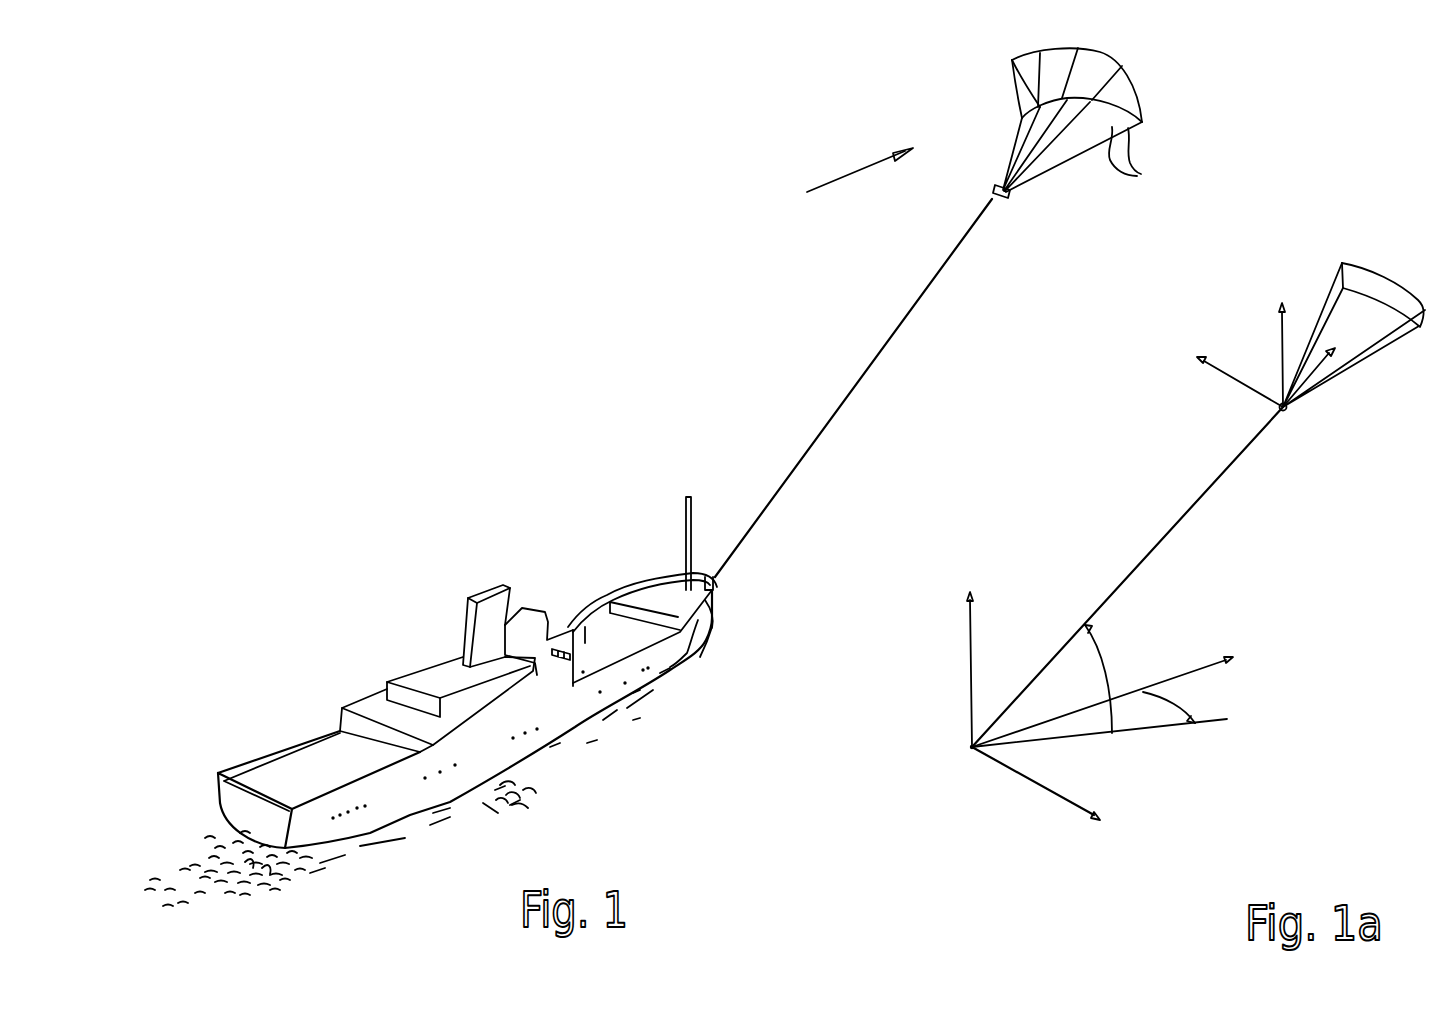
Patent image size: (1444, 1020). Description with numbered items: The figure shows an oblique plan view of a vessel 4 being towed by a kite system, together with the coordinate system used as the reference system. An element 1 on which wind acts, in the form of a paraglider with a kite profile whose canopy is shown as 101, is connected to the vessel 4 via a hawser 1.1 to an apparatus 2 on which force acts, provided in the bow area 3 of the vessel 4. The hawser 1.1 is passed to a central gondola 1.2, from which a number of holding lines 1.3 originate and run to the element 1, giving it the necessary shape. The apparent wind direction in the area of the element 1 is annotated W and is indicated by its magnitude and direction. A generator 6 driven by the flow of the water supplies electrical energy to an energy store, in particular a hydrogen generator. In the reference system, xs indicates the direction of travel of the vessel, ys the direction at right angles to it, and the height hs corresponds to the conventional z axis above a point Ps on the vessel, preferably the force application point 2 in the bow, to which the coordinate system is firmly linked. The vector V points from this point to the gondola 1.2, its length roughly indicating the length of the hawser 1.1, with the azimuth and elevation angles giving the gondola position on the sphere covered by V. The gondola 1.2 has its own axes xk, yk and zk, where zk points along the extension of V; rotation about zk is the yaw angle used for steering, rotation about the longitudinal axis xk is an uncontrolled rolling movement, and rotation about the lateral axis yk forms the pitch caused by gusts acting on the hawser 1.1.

In FIG. 1, the element on which wind acts 1 is at (976, 312).
In FIG. 1, the kite canopy (aerodynamic wing) 101 is at (1143, 83).
In FIG. 1, the hawser 1.1 is at (880, 355).
In FIG. 1, the central gondola 1.2 is at (993, 192).
In FIG. 1, the holding lines 1.3 is at (1097, 125).
In FIG. 1, the apparatus on which force acts 2 is at (707, 577).
In FIG. 1, the fore deck of ship 3 is at (662, 597).
In FIG. 1, the vessel 4 is at (565, 709).
In FIG. 1, the generator 6 is at (513, 796).
In FIG. 1, the apparent wind direction W is at (850, 171).
In FIG. 1A, the vector V is at (1178, 522).
In FIG. 1A, the reference point Ps is at (970, 747).
In FIG. 1A, the height hs is at (972, 651).
In FIG. 1A, the direction of travel of the vessel xs is at (1119, 691).
In FIG. 1A, the direction at right angles to the direction of travel ys is at (1049, 793).
In FIG. 1A, the longitudinal axis of the gondola xk is at (1222, 367).
In FIG. 1A, the lateral axis of the gondola yk is at (1285, 335).
In FIG. 1A, the vertical axis of the gondola zk is at (1319, 362).